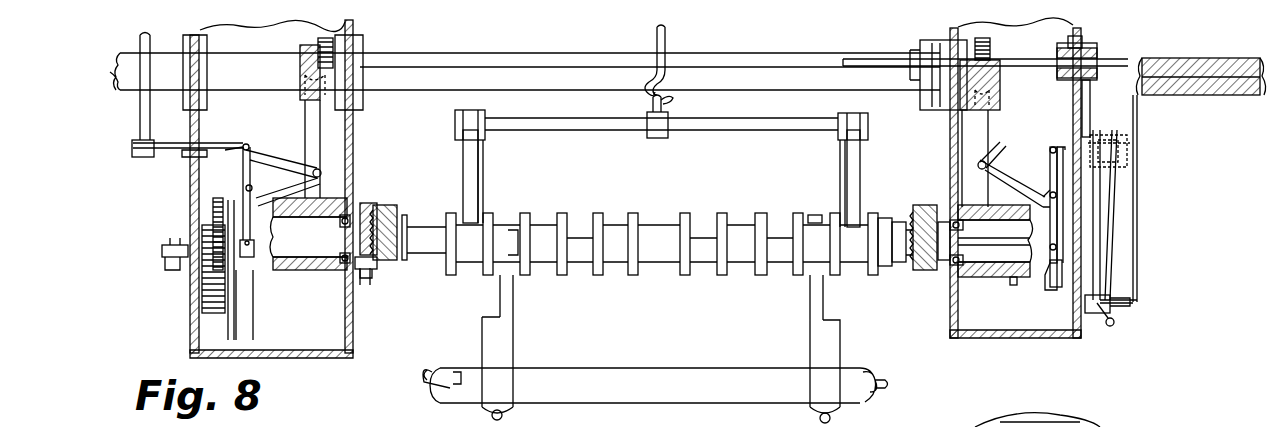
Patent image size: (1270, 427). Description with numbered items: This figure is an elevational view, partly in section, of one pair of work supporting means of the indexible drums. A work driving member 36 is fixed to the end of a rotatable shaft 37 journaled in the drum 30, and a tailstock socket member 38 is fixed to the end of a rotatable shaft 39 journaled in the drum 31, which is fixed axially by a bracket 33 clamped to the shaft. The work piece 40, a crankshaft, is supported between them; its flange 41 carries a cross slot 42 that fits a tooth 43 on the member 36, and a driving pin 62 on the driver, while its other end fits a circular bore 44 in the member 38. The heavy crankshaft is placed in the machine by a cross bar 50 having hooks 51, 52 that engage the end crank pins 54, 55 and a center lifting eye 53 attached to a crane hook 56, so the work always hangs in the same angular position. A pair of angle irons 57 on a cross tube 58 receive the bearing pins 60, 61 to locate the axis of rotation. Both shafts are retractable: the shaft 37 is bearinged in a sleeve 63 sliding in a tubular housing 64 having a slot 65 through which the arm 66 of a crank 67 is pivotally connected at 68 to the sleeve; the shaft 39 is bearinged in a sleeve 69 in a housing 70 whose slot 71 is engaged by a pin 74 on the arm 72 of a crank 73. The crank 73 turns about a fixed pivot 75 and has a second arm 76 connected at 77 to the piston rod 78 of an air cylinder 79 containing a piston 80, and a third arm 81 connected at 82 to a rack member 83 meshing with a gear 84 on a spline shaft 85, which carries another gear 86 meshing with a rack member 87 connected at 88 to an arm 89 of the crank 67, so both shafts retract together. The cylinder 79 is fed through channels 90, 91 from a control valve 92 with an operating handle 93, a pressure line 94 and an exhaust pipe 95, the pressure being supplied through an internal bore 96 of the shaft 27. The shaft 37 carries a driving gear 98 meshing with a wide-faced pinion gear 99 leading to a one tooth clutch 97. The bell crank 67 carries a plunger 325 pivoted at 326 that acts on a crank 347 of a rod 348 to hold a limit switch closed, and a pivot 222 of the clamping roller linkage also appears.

The shaft 27 is at (436, 85).
The drum 30 is at (355, 148).
The drum 31 is at (1018, 333).
The bracket 33 is at (925, 100).
The work driving member 36 is at (364, 201).
The rotatable shaft 37 is at (326, 277).
The tailstock socket member 38 is at (933, 215).
The rotatable shaft 39 is at (982, 280).
The work piece 40 is at (682, 284).
The flange 41 is at (383, 203).
The cross slot 42 is at (376, 268).
The tooth 43 is at (380, 222).
The circular bore 44 is at (930, 273).
The cross bar 50 is at (698, 132).
The hook 51 is at (474, 170).
The hook 52 is at (848, 155).
The lifting eye 53 is at (670, 109).
The crank pin 54 is at (482, 189).
The crank pin 55 is at (838, 189).
The hook 56 is at (666, 46).
The angle iron 57 is at (515, 302).
The cross tube 58 is at (725, 400).
The bearing pin 60 is at (508, 230).
The bearing pin 61 is at (375, 284).
The driving pin 62 is at (360, 275).
The sleeve 63 is at (328, 280).
The tubular housing 64 is at (280, 286).
The slot 65 is at (233, 207).
The arm 66 is at (278, 205).
The crank 67 is at (255, 168).
The pivot 68 is at (243, 260).
The sleeve 69 is at (983, 204).
The housing 70 is at (1020, 287).
The slot 71 is at (1058, 288).
The arm 72 is at (1043, 208).
The crank 73 is at (1037, 183).
The pin 74 is at (1048, 249).
The fixed pivot 75 is at (1073, 195).
The second arm 76 is at (1048, 148).
The pivot 77 is at (1055, 152).
The piston rod 78 is at (1085, 126).
The air cylinder 79 is at (1108, 140).
The piston 80 is at (1137, 143).
The third arm 81 is at (1003, 166).
The pivot 82 is at (978, 165).
The rack member 83 is at (984, 118).
The gear 84 is at (983, 56).
The spline shaft 85 is at (1030, 68).
The gear 86 is at (311, 44).
The rack member 87 is at (308, 117).
The pivot 88 is at (322, 175).
The arm 89 is at (282, 182).
The channel 90 is at (1100, 217).
The channel 91 is at (1113, 240).
The control valve 92 is at (1093, 315).
The operating handle 93 is at (1113, 323).
The pressure line 94 is at (1138, 280).
The exhaust pipe 95 is at (1135, 304).
The internal bore 96 is at (1184, 70).
The one tooth clutch 97 is at (173, 277).
The driving gear 98 is at (213, 208).
The pinion gear 99 is at (208, 310).
The pivot 222 is at (568, 419).
The plunger 325 is at (213, 140).
The pivot 326 is at (243, 145).
The crank 347 is at (136, 150).
The rod 348 is at (140, 107).